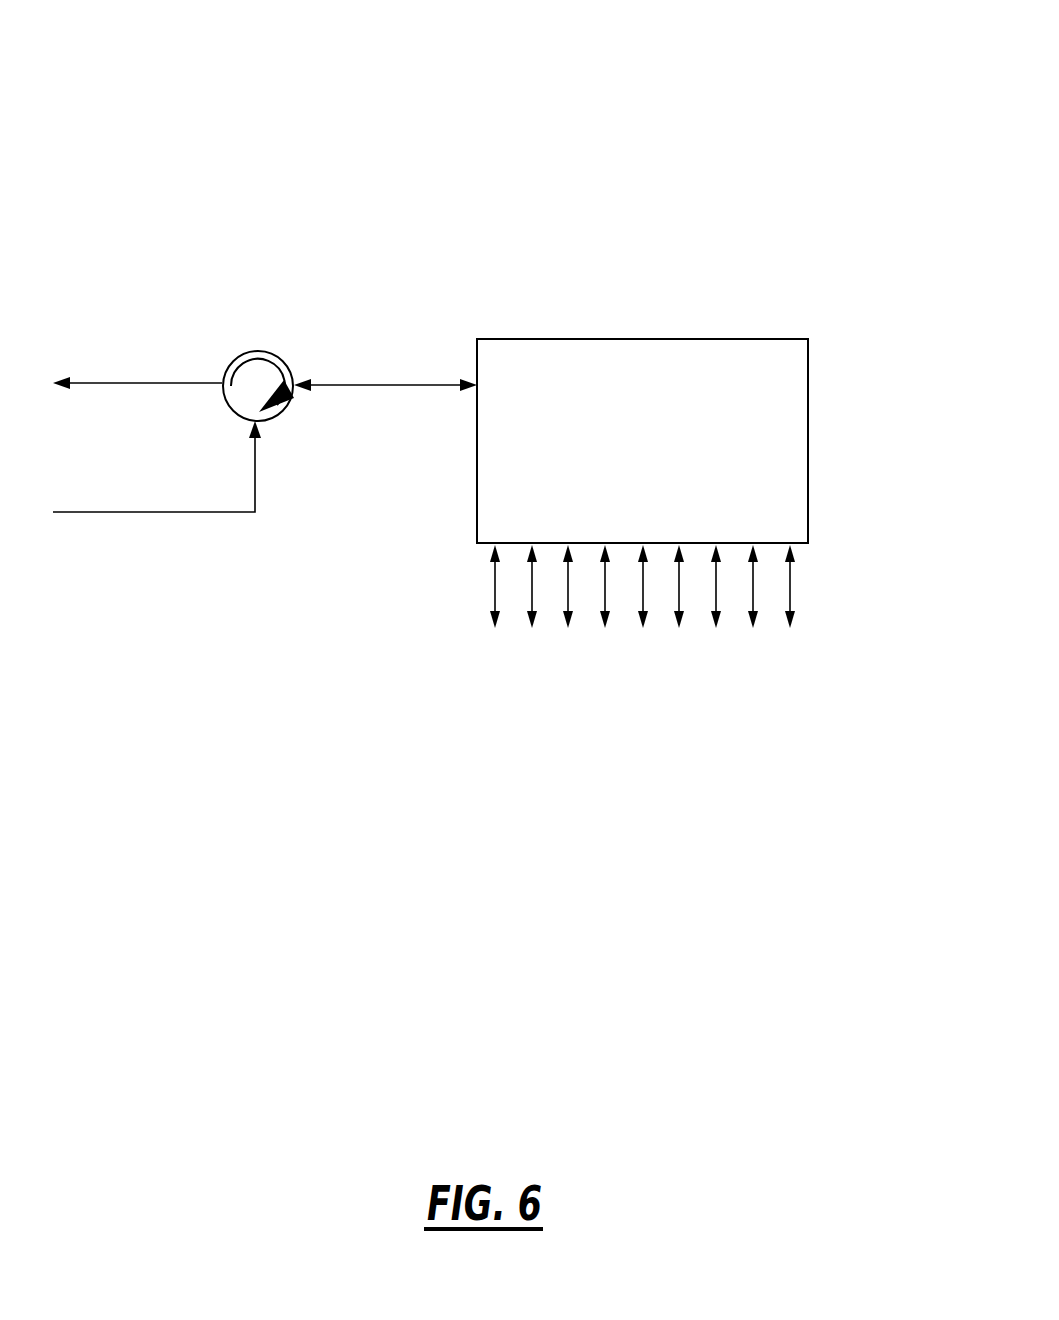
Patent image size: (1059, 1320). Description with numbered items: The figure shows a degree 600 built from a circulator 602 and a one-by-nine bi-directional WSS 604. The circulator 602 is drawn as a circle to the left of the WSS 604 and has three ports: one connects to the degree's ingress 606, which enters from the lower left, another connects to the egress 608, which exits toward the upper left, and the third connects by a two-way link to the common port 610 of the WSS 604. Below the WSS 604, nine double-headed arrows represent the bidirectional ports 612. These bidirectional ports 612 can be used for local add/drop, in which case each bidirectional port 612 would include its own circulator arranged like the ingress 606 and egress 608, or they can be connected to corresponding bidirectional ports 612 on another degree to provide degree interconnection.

The degree 600 is at (560, 130).
The circulator 602 is at (262, 351).
The 1×9 bi-directional WSS 604 is at (658, 339).
The ingress 606 is at (128, 512).
The egress 608 is at (115, 383).
The common port 610 is at (398, 385).
The bidirectional ports 612 is at (820, 578).